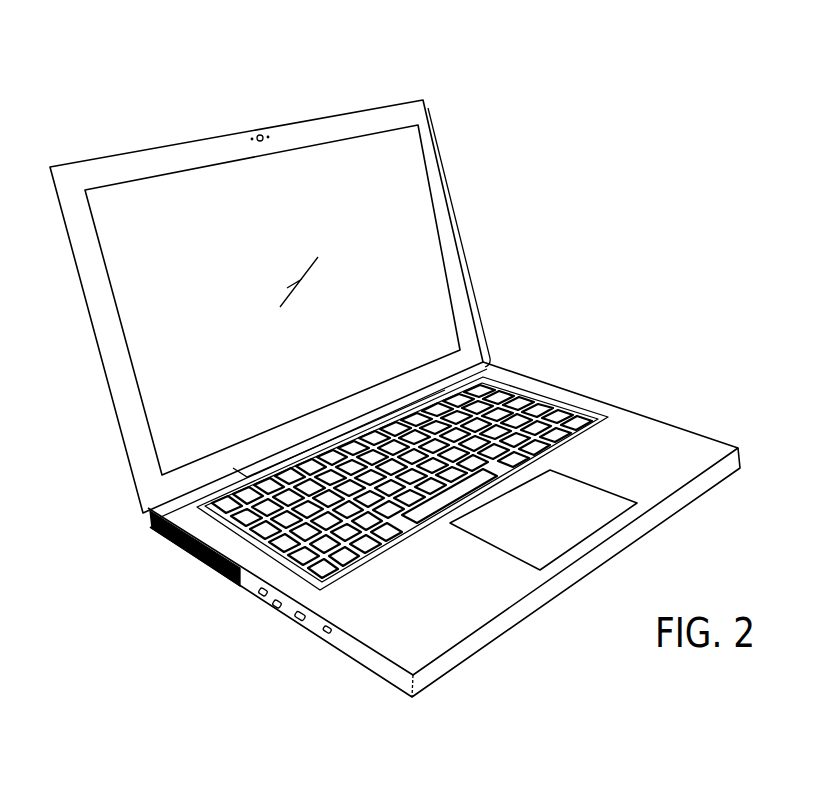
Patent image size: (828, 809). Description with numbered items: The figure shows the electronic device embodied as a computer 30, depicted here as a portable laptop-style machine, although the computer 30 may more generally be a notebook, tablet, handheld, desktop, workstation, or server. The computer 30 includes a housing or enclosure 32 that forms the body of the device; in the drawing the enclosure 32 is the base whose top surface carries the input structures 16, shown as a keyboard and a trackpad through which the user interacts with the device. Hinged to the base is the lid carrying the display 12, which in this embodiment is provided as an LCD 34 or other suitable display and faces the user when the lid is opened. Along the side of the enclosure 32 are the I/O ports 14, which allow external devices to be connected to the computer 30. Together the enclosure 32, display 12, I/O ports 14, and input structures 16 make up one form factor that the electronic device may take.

The computer 30 is at (210, 84).
The LCD 34 is at (420, 195).
The display 12 is at (434, 239).
The housing 32 is at (655, 419).
The I/O ports 14 is at (232, 584).
The input structures 16 is at (540, 403).